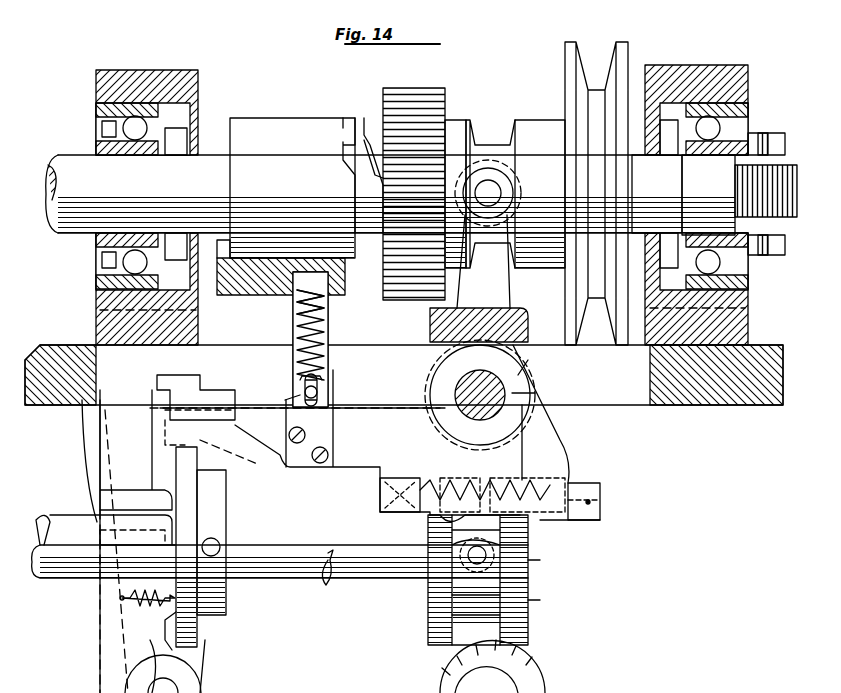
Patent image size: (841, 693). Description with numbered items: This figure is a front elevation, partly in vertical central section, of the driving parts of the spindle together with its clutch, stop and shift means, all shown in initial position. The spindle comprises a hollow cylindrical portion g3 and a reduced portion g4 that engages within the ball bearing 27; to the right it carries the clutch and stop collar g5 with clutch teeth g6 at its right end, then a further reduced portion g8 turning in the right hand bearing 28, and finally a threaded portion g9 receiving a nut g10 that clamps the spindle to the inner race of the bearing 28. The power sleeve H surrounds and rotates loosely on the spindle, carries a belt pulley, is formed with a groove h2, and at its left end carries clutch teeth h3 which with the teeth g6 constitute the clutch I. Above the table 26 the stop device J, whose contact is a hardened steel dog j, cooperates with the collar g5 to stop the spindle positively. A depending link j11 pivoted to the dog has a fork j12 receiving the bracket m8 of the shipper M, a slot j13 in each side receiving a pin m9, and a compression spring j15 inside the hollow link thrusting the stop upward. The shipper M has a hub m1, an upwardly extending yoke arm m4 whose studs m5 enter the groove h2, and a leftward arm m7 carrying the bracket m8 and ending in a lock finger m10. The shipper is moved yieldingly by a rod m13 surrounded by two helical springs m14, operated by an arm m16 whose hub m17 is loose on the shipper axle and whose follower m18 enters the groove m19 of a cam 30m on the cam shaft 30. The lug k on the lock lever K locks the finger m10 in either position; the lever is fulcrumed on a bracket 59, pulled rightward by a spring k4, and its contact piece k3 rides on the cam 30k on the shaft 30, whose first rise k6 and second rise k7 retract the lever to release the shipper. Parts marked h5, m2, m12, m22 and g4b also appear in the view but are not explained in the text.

The ball bearing 27 is at (148, 82).
The right hand bearing 28 is at (688, 78).
The table 26 is at (50, 368).
The bracket 59 is at (84, 462).
The shaft 30 is at (35, 578).
The cam 30k is at (212, 663).
The cam 30m is at (528, 615).
The hollow cylindrical portion g3 is at (72, 233).
The clutch and stop collar g5 is at (282, 133).
The clutch teeth g6 is at (350, 157).
The clutch teeth h3 is at (374, 157).
The clutch I is at (382, 80).
The gear h5 is at (415, 98).
The groove h2 is at (487, 128).
The power sleeve H is at (537, 140).
The reduced portion g4 is at (657, 194).
The further reduced portion g8 is at (708, 195).
The threaded portion g9 is at (775, 225).
The nut g10 is at (772, 132).
The pins or studs m5 is at (488, 198).
The upwardly extending arm m4 is at (483, 261).
The bracket block m2 is at (528, 320).
The hub m1 is at (520, 377).
The hub m17 is at (532, 393).
The shipper lever M is at (560, 428).
The block m12 is at (575, 466).
The helical springs m14 is at (515, 433).
The arm m16 is at (441, 458).
The rod m13 is at (440, 478).
The leftward extending arm m7 is at (328, 440).
The bent plate or bracket m8 is at (330, 380).
The cross pin m9 is at (305, 392).
The locking finger m10 is at (194, 380).
The spring housing m22 is at (378, 492).
The follower or stud m18 is at (545, 563).
The groove m19 is at (478, 580).
The stop dog j is at (218, 248).
The stop device J is at (252, 300).
The depending link j11 is at (293, 326).
The fork j12 is at (326, 396).
The slot j13 is at (305, 378).
The spring j15 is at (328, 334).
The lock lug k is at (135, 388).
The contact piece k3 is at (127, 517).
The spring k4 is at (112, 600).
The first rise k6 is at (176, 628).
The second rise k7 is at (185, 492).
The lock lever K is at (100, 632).
The gear g4b is at (572, 692).